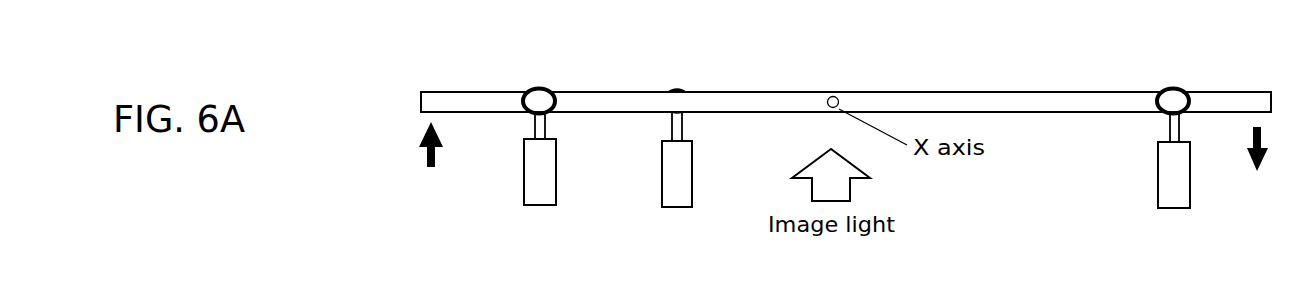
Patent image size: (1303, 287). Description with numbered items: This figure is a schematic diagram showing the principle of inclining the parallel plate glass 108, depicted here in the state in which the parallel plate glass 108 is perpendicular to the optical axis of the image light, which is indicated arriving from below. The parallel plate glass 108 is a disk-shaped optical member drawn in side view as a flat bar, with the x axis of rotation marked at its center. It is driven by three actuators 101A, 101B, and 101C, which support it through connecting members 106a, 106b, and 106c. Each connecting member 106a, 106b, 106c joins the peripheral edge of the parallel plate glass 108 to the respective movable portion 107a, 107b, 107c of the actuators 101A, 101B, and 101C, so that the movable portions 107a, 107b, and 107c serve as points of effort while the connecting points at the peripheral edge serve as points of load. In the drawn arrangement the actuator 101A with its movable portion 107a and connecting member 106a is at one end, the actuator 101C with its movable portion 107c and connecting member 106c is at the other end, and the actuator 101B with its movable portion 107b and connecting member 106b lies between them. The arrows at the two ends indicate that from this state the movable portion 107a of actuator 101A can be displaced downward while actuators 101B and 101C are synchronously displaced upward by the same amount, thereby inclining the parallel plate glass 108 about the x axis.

The connecting member 106a is at (1178, 86).
The connecting member 106b is at (680, 86).
The connecting member 106c is at (547, 86).
The movable portion 107a is at (1170, 128).
The movable portion 107b is at (678, 127).
The movable portion 107c is at (540, 127).
The actuator 101A is at (1170, 183).
The actuator 101B is at (685, 178).
The actuator 101C is at (545, 177).
The parallel plate glass 108 is at (852, 92).